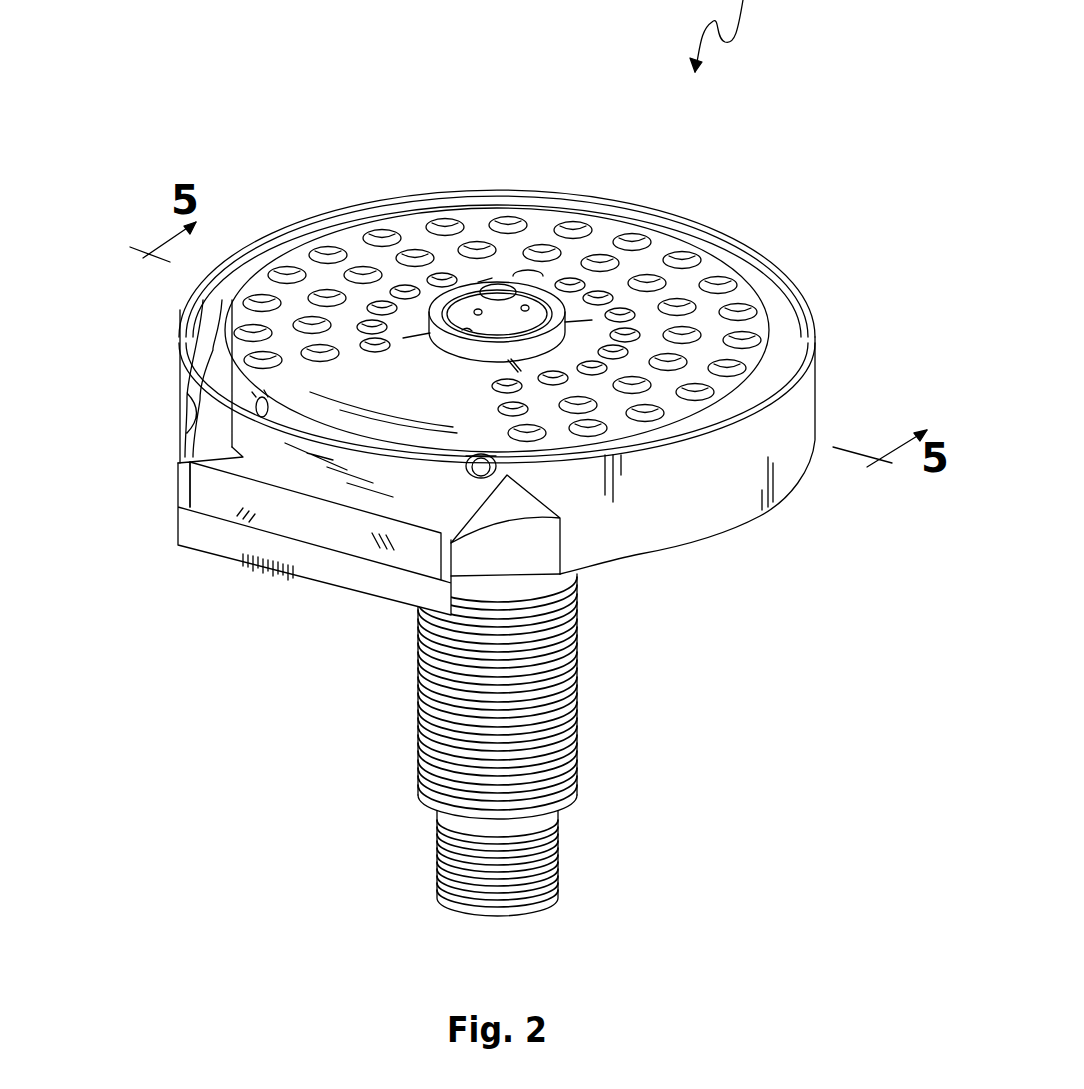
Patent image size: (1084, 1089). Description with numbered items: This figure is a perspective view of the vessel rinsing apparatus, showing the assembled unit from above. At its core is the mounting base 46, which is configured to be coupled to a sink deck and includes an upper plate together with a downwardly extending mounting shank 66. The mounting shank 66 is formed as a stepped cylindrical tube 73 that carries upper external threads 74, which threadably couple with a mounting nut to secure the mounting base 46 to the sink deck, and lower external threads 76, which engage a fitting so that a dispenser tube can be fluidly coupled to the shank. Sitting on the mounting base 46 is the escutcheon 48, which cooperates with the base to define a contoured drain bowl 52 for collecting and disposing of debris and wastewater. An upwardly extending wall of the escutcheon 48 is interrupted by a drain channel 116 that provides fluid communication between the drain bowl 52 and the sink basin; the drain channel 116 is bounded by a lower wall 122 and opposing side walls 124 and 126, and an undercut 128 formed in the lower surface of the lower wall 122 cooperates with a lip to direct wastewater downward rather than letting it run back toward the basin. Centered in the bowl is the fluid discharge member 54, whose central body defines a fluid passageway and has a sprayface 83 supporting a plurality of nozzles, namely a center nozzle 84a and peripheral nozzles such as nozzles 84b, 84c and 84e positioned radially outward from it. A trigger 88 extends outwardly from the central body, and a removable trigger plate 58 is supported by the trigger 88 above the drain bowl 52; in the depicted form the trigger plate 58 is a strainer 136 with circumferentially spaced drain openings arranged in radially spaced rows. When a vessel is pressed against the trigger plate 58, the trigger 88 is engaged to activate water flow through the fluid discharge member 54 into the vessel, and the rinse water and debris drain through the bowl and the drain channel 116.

The mounting base 46 is at (413, 723).
The escutcheon 48 is at (832, 365).
The drain bowl 52 is at (790, 300).
The fluid discharge member 54 is at (530, 290).
The trigger plate 58 is at (718, 262).
The mounting shank 66 is at (577, 756).
The stepped cylindrical tube 73 is at (418, 784).
The upper external threads 74 is at (420, 682).
The lower external threads 76 is at (560, 843).
The sprayface 83 is at (540, 302).
The center nozzle 84a is at (498, 288).
The peripheral nozzle 84b is at (478, 311).
The peripheral nozzle 84c is at (485, 280).
The peripheral nozzle 84e is at (525, 308).
The trigger 88 is at (259, 432).
The drain channel 116 is at (295, 533).
The lower wall 122 is at (323, 547).
The side wall 124 is at (183, 476).
The side wall 126 is at (467, 567).
The undercut 128 is at (445, 572).
The strainer 136 is at (296, 258).